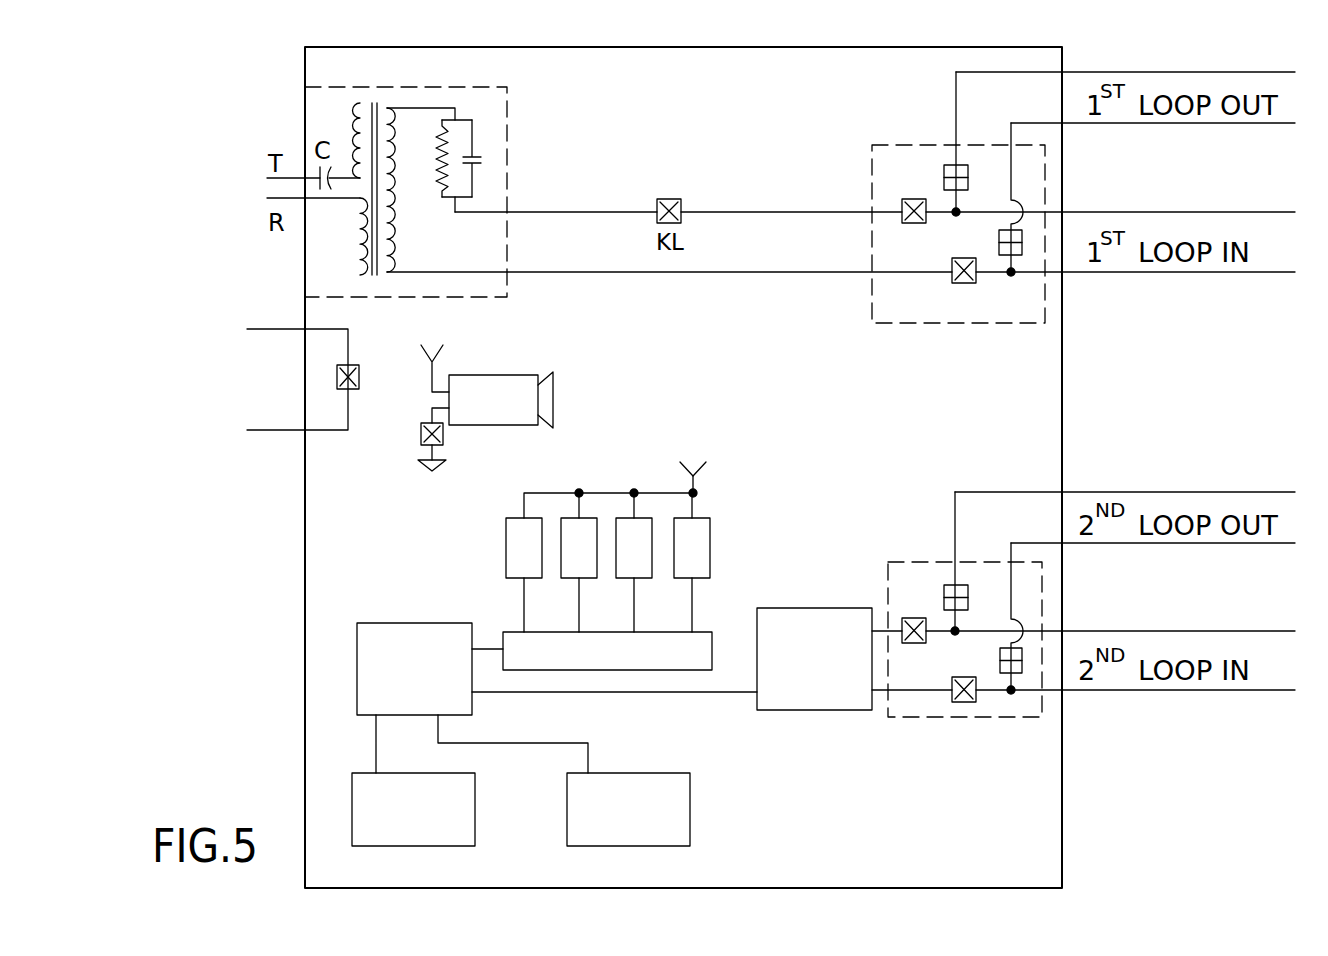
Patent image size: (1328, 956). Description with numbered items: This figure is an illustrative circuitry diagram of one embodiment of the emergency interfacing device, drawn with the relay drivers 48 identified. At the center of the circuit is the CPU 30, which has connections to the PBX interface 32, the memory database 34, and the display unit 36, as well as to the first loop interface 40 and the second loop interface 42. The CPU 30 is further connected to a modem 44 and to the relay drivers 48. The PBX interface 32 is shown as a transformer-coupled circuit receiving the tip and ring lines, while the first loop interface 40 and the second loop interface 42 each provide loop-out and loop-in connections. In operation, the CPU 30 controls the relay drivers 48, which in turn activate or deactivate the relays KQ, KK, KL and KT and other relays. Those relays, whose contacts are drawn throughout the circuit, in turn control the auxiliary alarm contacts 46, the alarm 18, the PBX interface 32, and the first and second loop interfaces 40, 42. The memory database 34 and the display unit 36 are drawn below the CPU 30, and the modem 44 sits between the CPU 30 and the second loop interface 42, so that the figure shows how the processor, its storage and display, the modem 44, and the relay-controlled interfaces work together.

The PBX interface 32 is at (507, 140).
The alarm 18 is at (490, 375).
The auxiliary alarm contacts 46 is at (348, 417).
The 1st loop interface 40 is at (985, 323).
The 2nd loop interface 42 is at (950, 717).
The modem 44 is at (838, 607).
The central processing unit 30 is at (382, 622).
The relay drivers 48 is at (550, 670).
The memory database 34 is at (475, 805).
The display unit 36 is at (690, 800).